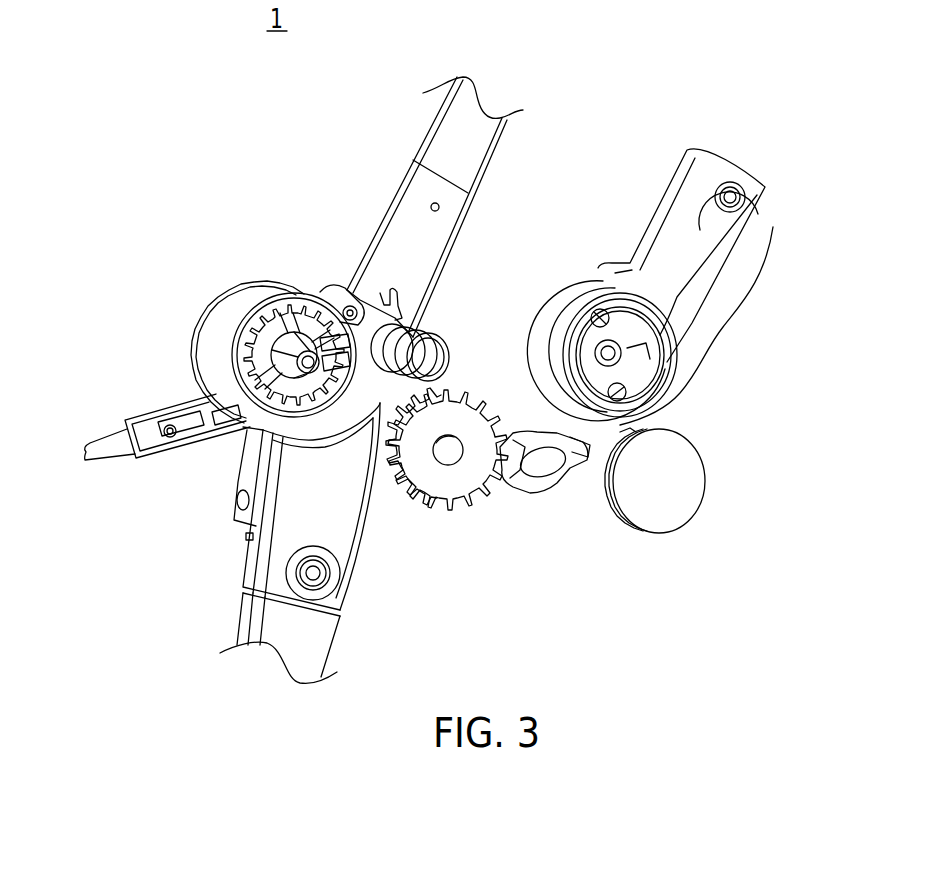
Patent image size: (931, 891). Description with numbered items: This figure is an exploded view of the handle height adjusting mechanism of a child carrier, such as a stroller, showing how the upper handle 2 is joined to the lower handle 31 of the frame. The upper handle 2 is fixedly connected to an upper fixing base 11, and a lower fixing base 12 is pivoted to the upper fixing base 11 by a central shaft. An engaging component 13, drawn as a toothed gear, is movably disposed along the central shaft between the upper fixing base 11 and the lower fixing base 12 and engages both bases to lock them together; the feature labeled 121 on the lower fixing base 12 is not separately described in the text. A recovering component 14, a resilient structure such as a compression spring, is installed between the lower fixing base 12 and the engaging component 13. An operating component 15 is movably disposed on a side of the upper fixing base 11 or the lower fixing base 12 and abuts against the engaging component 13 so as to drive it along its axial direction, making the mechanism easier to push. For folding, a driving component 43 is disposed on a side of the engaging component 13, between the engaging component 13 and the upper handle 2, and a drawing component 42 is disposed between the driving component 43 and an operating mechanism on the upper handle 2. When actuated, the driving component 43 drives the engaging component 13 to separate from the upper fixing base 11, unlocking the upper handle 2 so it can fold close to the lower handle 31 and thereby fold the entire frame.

The upper handle 2 is at (440, 140).
The upper fixing base 11 is at (583, 293).
The lower fixing base 12 is at (227, 293).
The internal gear teeth 121 is at (283, 292).
The engaging component 13 is at (440, 473).
The recovering component 14 is at (440, 333).
The operating component 15 is at (667, 508).
The lower handle 31 is at (298, 643).
The drawing component 42 is at (708, 352).
The driving component 43 is at (518, 490).